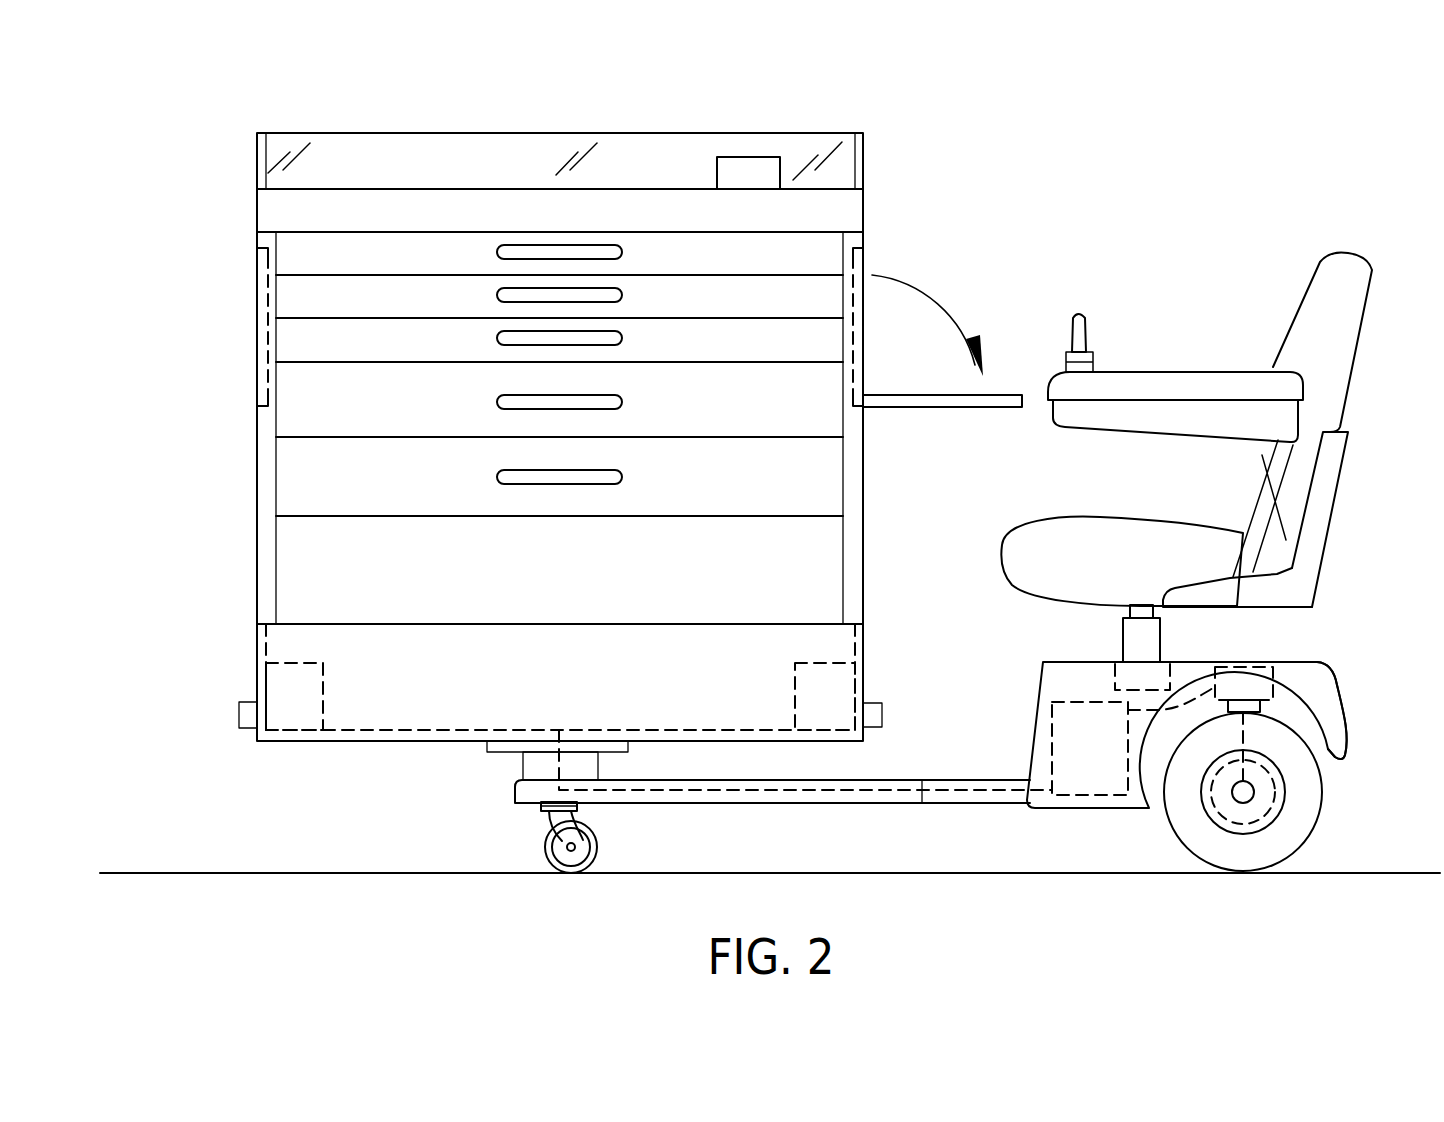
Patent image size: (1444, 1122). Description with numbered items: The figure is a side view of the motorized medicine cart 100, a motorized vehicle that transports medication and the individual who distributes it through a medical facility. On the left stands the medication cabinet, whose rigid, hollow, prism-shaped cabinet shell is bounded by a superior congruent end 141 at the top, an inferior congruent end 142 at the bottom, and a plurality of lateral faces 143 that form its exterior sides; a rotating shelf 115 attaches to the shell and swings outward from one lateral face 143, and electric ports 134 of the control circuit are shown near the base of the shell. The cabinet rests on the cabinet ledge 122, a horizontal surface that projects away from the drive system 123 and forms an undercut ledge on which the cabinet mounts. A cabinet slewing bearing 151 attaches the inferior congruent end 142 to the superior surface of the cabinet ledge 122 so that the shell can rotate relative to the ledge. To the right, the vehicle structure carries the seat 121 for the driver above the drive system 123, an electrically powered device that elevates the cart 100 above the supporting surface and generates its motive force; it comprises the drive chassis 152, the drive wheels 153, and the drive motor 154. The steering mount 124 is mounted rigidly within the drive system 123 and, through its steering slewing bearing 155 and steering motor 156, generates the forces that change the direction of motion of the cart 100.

The motorized medicine cart 100 is at (1100, 174).
The rotating shelves 115 is at (882, 373).
The seat 121 is at (1337, 507).
The cabinet ledge 122 is at (688, 803).
The drive system 123 is at (1276, 777).
The steering mount 124 is at (1290, 694).
The electric ports 134 is at (236, 726).
The superior congruent end 141 is at (628, 189).
The inferior congruent end 142 is at (362, 742).
The lateral faces 143 is at (257, 477).
The cabinet slewing bearing 151 is at (532, 762).
The drive chassis 152 is at (1153, 808).
The drive wheels 153 is at (1246, 852).
The drive motor 154 is at (1268, 803).
The steering slewing bearing 155 is at (1258, 700).
The steering motor 156 is at (1250, 683).